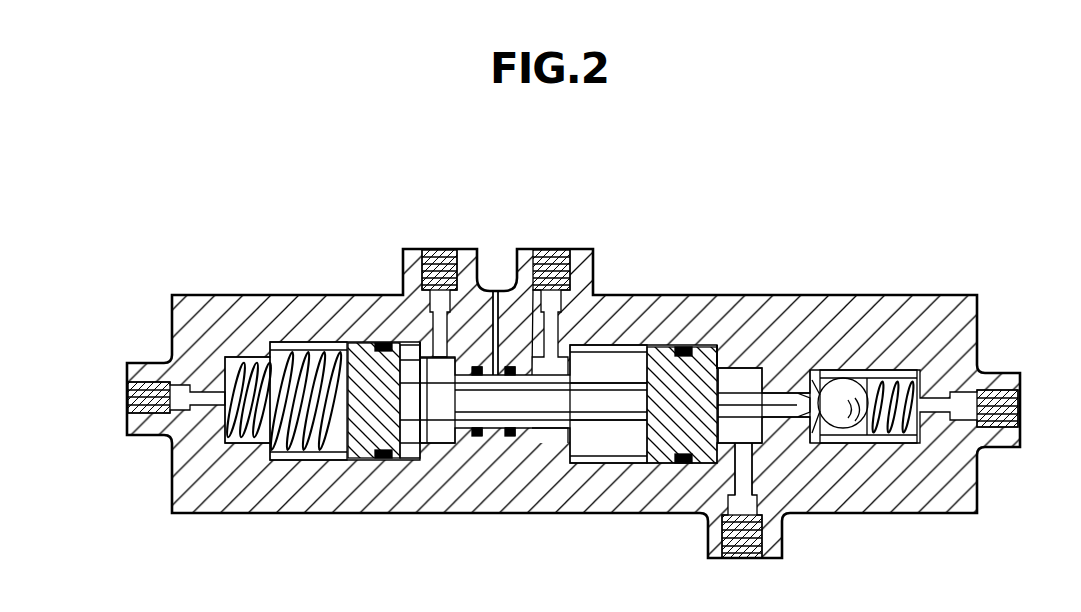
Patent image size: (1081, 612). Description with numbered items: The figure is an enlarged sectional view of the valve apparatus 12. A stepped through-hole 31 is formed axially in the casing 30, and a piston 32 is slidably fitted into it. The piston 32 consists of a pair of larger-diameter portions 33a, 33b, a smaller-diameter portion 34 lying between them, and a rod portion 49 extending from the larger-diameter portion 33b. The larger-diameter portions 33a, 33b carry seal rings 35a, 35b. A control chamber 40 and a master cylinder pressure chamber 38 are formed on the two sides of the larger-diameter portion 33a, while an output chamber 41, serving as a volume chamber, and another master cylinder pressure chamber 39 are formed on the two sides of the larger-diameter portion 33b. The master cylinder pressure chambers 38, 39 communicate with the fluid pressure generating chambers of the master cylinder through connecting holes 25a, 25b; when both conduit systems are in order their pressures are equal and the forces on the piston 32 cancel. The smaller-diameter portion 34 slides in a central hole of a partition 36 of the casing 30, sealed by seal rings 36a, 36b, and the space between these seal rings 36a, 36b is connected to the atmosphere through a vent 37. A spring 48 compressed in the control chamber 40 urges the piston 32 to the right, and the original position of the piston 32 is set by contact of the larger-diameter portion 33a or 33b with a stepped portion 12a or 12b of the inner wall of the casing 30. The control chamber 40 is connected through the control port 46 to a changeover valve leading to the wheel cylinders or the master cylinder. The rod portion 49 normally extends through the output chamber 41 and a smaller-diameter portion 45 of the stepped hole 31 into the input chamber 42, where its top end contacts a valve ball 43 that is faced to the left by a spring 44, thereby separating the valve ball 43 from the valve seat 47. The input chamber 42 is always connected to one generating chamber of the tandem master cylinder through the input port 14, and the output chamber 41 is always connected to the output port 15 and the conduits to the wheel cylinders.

The valve apparatus 12 is at (316, 290).
The stepped portion of the inner wall 12a is at (415, 320).
The stepped portion of the inner wall 12b is at (725, 360).
The input port 14 is at (1020, 420).
The output port 15 is at (742, 545).
The connecting hole 25a is at (440, 270).
The connecting hole 25b is at (550, 270).
The casing 30 is at (573, 384).
The stepped through-hole 31 is at (303, 460).
The piston 32 is at (526, 398).
The larger-diameter portion 33a is at (367, 458).
The larger-diameter portion 33b is at (660, 362).
The smaller-diameter portion 34 is at (580, 410).
The seal ring 35a is at (362, 399).
The seal ring 35b is at (670, 337).
The partition 36 is at (505, 479).
The seal ring 36a is at (481, 440).
The seal ring 36b is at (513, 440).
The vent 37 is at (495, 292).
The master cylinder pressure chamber 38 is at (440, 447).
The master cylinder pressure chamber 39 is at (613, 450).
The control chamber 40 is at (281, 399).
The output chamber 41 is at (747, 378).
The input chamber 42 is at (869, 387).
The valve ball 43 is at (845, 395).
The spring 44 is at (880, 445).
The smaller-diameter portion of the stepped hole 45 is at (790, 440).
The control port 46 is at (126, 409).
The valve seat 47 is at (827, 380).
The spring 48 is at (270, 462).
The rod portion 49 is at (800, 425).